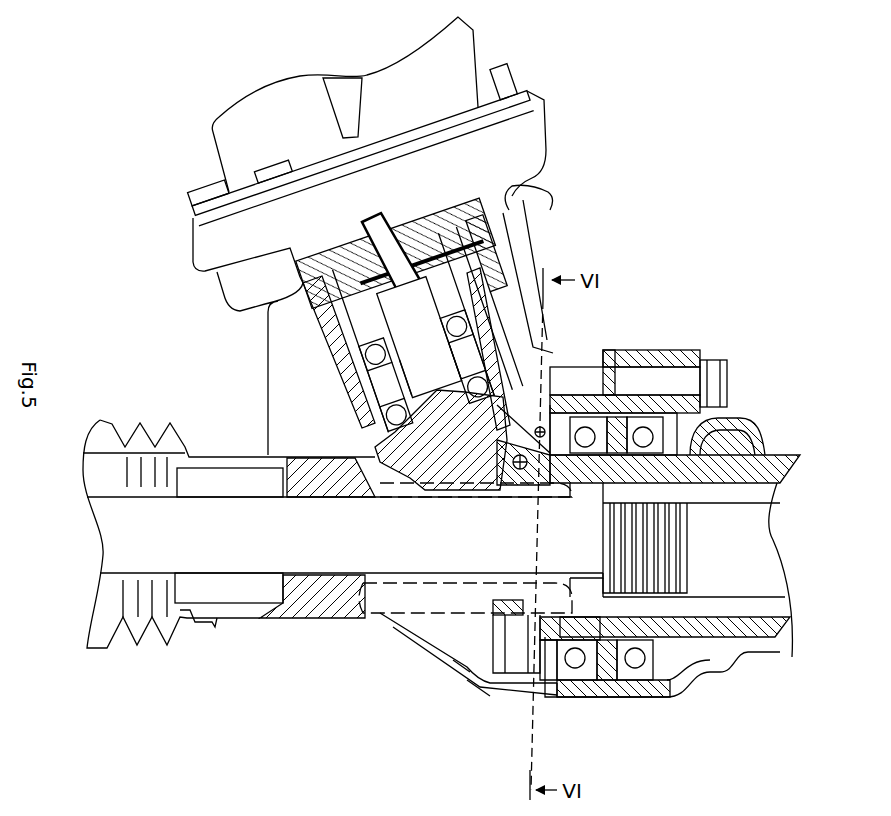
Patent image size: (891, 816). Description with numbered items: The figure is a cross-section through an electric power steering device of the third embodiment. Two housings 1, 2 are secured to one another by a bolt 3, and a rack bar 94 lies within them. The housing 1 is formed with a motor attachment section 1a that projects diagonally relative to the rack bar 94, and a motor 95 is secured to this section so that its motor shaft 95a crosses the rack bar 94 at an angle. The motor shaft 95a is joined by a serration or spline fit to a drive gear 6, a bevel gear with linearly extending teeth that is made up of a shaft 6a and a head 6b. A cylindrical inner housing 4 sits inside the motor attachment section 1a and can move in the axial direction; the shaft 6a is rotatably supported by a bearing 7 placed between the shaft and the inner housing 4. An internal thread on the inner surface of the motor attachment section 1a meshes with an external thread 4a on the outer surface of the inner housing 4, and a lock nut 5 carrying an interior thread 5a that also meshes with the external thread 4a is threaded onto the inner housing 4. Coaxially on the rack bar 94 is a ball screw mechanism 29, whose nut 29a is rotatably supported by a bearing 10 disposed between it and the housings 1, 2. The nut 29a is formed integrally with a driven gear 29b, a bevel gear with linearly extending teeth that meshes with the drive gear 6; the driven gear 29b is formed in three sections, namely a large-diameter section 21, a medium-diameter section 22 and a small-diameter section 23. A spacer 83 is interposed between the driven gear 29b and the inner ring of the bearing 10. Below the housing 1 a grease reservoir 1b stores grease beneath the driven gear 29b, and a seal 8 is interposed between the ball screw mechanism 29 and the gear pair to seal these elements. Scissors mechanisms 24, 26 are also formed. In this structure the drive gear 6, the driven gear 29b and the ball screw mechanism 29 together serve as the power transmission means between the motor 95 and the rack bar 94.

The motor 95 is at (490, 52).
The motor shaft 95a is at (393, 233).
The lock nut 5 is at (495, 193).
The interior thread 5a is at (508, 227).
The external thread 4a is at (487, 260).
The motor attachment section 1a is at (503, 272).
The inner housing 4 is at (513, 327).
The scissors mechanism 24 is at (607, 353).
The bolt 3 is at (680, 378).
The bearing 7 is at (333, 348).
The drive gear 6 is at (430, 352).
The shaft 6a is at (410, 380).
The head 6b is at (362, 455).
The nut 29a is at (757, 472).
The ball screw mechanism 29 is at (802, 486).
The rack bar 94 is at (765, 543).
The scissors mechanism 26 is at (510, 503).
The housing 1 is at (313, 612).
The seal 8 is at (420, 588).
The large-diameter section 21 is at (456, 667).
The small-diameter section 23 is at (500, 615).
The medium-diameter section 22 is at (520, 647).
The grease reservoir 1b is at (477, 682).
The driven gear 29b is at (527, 690).
The spacer 83 is at (546, 668).
The bearing 10 is at (578, 692).
The housing 2 is at (707, 682).